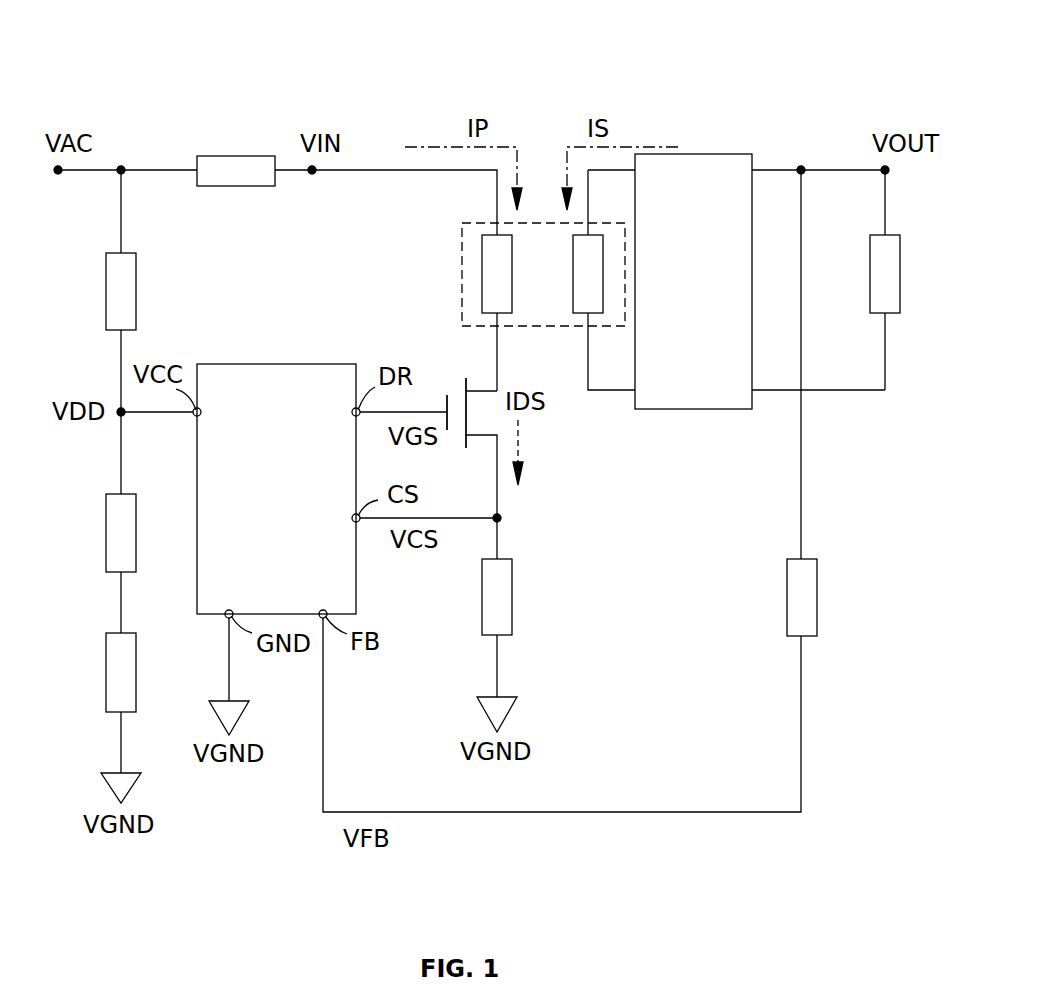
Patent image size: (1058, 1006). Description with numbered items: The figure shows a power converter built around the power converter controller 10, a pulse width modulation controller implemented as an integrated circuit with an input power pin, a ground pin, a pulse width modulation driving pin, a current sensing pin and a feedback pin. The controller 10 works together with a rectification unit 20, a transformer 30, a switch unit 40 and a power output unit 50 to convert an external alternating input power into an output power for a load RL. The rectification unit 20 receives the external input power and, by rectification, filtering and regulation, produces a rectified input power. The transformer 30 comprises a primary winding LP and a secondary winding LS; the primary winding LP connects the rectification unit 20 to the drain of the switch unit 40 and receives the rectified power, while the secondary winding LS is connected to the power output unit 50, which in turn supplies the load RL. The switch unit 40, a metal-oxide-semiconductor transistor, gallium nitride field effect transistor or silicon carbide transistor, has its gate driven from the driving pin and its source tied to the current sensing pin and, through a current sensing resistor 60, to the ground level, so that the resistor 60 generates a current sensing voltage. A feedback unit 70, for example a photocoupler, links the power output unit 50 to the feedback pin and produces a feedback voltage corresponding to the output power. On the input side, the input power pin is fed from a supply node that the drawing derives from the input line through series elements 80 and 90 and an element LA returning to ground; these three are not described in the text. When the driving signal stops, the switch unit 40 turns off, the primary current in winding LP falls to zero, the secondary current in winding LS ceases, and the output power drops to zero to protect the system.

The power converter controller 10 is at (357, 612).
The rectification unit 20 is at (235, 156).
The transformer 30 is at (541, 283).
The switch unit 40 is at (453, 388).
The power output unit 50 is at (722, 154).
The current sensing resistor 60 is at (512, 597).
The feedback unit 70 is at (817, 597).
The first divider resistor 80 is at (106, 290).
The second divider resistor 90 is at (106, 530).
The auxiliary inductor LA is at (106, 670).
The primary winding LP is at (489, 235).
The secondary winding LS is at (596, 235).
The load RL is at (900, 274).